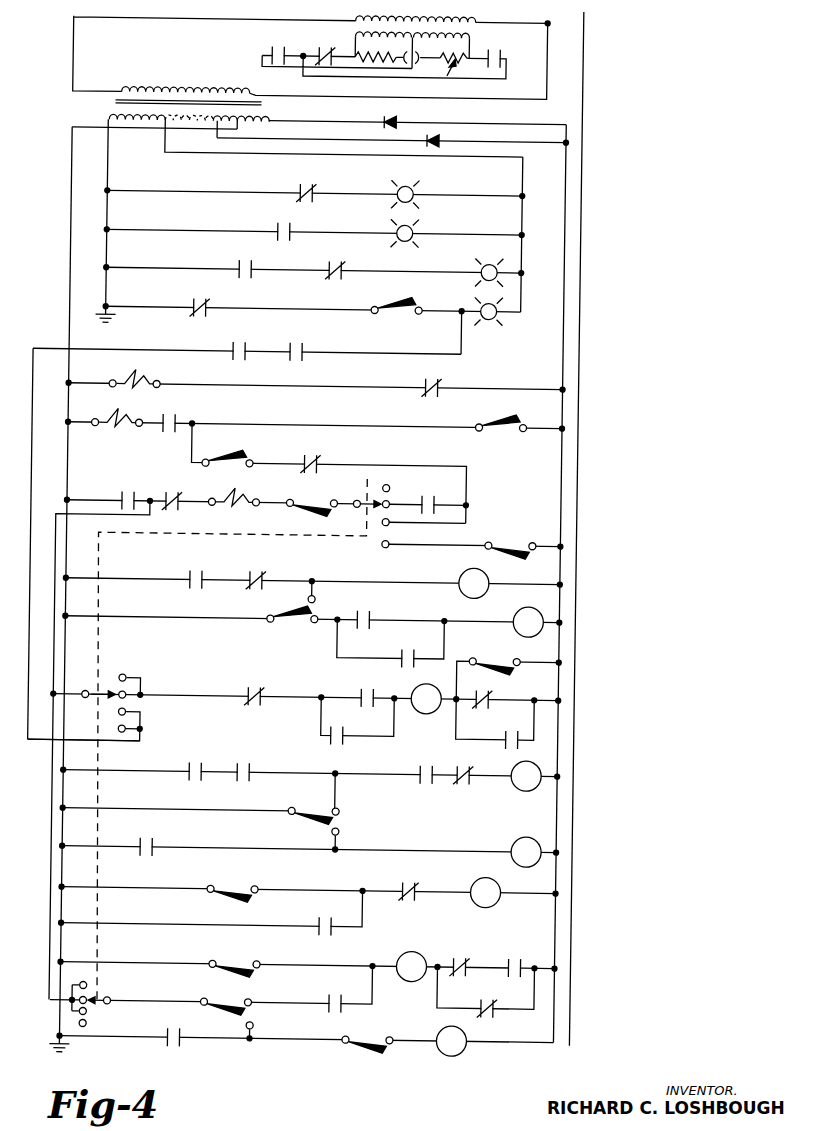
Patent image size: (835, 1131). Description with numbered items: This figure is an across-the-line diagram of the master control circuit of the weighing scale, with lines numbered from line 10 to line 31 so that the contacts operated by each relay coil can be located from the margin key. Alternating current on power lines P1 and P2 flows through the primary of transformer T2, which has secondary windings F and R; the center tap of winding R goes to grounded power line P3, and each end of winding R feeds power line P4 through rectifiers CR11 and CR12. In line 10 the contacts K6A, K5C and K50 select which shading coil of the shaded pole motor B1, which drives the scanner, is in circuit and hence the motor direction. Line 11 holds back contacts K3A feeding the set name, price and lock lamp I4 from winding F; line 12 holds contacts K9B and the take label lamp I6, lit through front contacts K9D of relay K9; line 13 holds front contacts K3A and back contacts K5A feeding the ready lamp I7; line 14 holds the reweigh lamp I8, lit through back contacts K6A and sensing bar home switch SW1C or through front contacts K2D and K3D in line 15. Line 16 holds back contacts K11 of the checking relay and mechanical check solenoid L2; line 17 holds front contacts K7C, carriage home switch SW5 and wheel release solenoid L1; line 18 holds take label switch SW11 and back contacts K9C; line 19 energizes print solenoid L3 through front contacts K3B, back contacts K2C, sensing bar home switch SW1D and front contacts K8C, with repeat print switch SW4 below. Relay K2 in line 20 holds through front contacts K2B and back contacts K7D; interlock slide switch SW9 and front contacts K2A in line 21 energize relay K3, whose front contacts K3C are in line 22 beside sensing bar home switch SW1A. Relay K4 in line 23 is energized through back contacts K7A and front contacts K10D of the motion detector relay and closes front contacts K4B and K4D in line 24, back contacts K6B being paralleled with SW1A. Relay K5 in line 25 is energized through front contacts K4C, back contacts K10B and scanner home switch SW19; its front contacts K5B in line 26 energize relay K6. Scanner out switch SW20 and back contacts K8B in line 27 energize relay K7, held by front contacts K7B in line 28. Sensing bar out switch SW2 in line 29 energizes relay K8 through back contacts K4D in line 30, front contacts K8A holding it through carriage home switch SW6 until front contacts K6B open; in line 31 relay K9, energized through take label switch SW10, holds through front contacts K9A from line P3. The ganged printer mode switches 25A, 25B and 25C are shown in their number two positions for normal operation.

The power input rung with oscillator circuit 10 is at (577, 56).
The rung 11 lamp I4 circuit 11 is at (577, 198).
The rung 12 lamp I6 circuit 12 is at (577, 236).
The rung 13 lamp I7 circuit 13 is at (577, 275).
The rung 14 lamp I8 circuit 14 is at (577, 312).
The rung 15 K2D K3D contact circuit 15 is at (577, 351).
The rung 16 K11 circuit 16 is at (577, 388).
The rung 17 K7C SW5 circuit 17 is at (577, 427).
The rung 18 SW11 K9C circuit 18 is at (577, 466).
The rung 19 K3B K2C L3 SW1D K8C circuit 19 is at (577, 506).
The rung 20 relay K2 coil circuit 20 is at (577, 581).
The rung 21 relay K3 coil circuit 21 is at (577, 619).
The rung 22 SW1A circuit 22 is at (577, 658).
The rung 23 relay K4 coil circuit 23 is at (577, 696).
The rung 24 connector 25C return line 24 is at (577, 736).
The rung 25 relay K5 coil circuit 25 is at (577, 774).
The rung 26 relay K6 coil circuit 26 is at (577, 849).
The rung 27 relay K7 coil circuit 27 is at (577, 889).
The rung 28 K7B contact circuit 28 is at (577, 926).
The rung 29 relay K8 coil circuit 29 is at (577, 964).
The rung 30 SW6 K8A circuit 30 is at (577, 1001).
The rung 31 relay K9 coil circuit 31 is at (577, 1038).
The plug connector 25A is at (101, 1001).
The plug connector 25B is at (369, 507).
The plug connector 25C is at (106, 692).
The power terminal P1 is at (67, 17).
The power terminal P2 is at (541, 20).
The power terminal P3 is at (67, 130).
The power terminal P4 is at (561, 139).
The transformer T2 is at (168, 93).
The potentiometer B1 is at (458, 68).
The transformer tap F is at (103, 120).
The transformer tap R is at (262, 121).
The rectifier diode CR11 is at (392, 119).
The rectifier diode CR12 is at (438, 137).
The relay contact K50 is at (500, 52).
The relay contact K6A is at (238, 174).
The relay contact K5C is at (321, 49).
The relay contact K3A is at (250, 474).
The relay contact K9B is at (281, 223).
The relay contact K5A is at (289, 513).
The indicator lamp I4 is at (405, 187).
The indicator lamp I6 is at (415, 231).
The indicator lamp I7 is at (489, 264).
The indicator lamp I8 is at (488, 306).
The switch SW1C is at (396, 298).
The relay contact K2D is at (239, 343).
The relay contact K3D is at (296, 344).
The fuse L2 is at (135, 371).
The fuse L1 is at (117, 413).
The fuse L3 is at (234, 483).
The relay contact K11 is at (431, 378).
The relay contact K7C is at (167, 413).
The switch SW5 is at (500, 414).
The switch SW11 is at (226, 451).
The relay contact K9C is at (310, 454).
The relay contact K3B is at (126, 491).
The relay contact K2C is at (170, 492).
The switch SW1D is at (311, 495).
The relay contact K8C is at (426, 496).
The switch SW4 is at (511, 540).
The relay contact K2B is at (195, 570).
The relay contact K7D is at (255, 571).
The relay coil K2 is at (474, 583).
The switch SW9 is at (292, 607).
The relay contact K2A is at (362, 611).
The relay contact K3C is at (403, 650).
The relay coil K3 is at (528, 622).
The switch SW1A is at (491, 653).
The relay contact K7A is at (253, 687).
The relay contact K10D is at (366, 690).
The relay contact K4B is at (337, 727).
The relay coil K4 is at (426, 699).
The relay contact K6B is at (495, 825).
The relay contact K4D is at (498, 865).
The relay contact K4C is at (423, 766).
The relay contact K10B is at (464, 767).
The relay coil K5 is at (526, 776).
The switch SW19 is at (200, 817).
The relay contact K5B is at (144, 838).
The relay coil K6 is at (526, 852).
The switch SW20 is at (228, 881).
The relay contact K8B is at (407, 881).
The relay coil K7 is at (485, 892).
The relay contact K7B is at (320, 917).
The switch SW2 is at (230, 957).
The relay coil K8 is at (411, 966).
The relay contact K9D is at (457, 958).
The switch SW6 is at (224, 995).
The relay contact K8A is at (328, 994).
The relay contact K9A is at (171, 1028).
The switch SW10 is at (364, 1033).
The relay coil K9 is at (451, 1041).